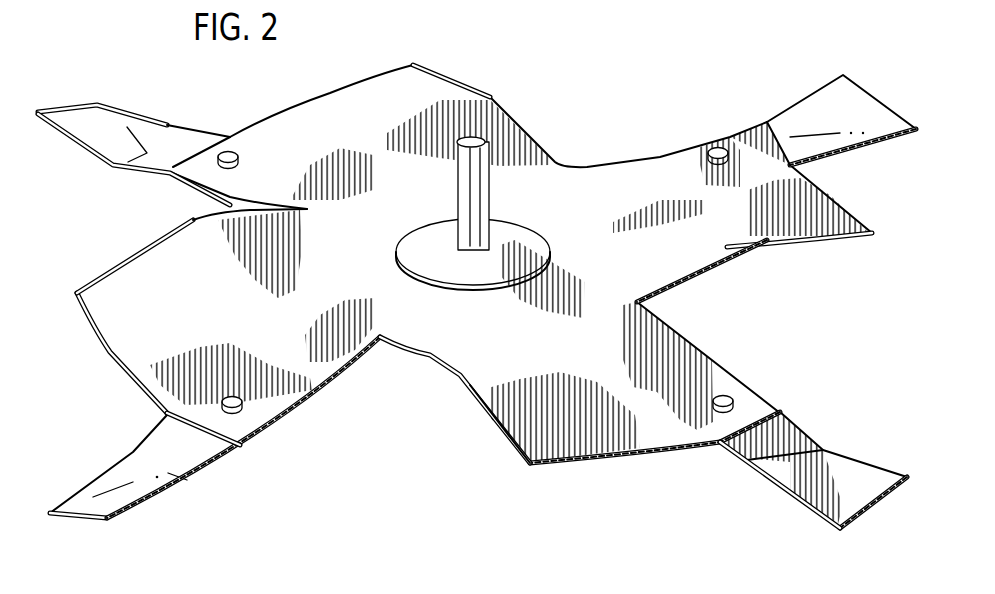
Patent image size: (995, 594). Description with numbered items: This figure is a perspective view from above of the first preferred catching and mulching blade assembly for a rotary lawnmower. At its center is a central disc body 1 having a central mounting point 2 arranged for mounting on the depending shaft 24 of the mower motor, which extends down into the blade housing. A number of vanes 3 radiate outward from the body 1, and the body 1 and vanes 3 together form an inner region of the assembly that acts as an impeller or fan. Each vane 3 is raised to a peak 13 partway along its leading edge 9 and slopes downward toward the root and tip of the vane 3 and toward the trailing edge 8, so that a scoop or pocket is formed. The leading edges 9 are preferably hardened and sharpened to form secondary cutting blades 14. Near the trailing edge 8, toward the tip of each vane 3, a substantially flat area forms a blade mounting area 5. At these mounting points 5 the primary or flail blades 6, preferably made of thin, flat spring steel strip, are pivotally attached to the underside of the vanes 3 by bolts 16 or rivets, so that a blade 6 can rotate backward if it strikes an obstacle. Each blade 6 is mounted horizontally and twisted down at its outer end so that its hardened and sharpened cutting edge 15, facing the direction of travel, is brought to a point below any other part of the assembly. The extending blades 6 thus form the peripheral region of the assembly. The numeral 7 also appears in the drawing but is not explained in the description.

The central disc body 1 is at (547, 208).
The central mounting point 2 is at (458, 262).
The shaft 24 is at (487, 148).
The vane 3 is at (437, 98).
The bolt 16 is at (716, 152).
The trailing edge 8 is at (708, 350).
The leading edge 9 is at (153, 231).
The blade mounting area 5 is at (780, 400).
The flail blade 6 is at (747, 462).
The blade edge 7 is at (880, 481).
The peak 13 is at (477, 365).
The secondary cutting blade 14 is at (505, 428).
The cutting edge 15 is at (820, 512).